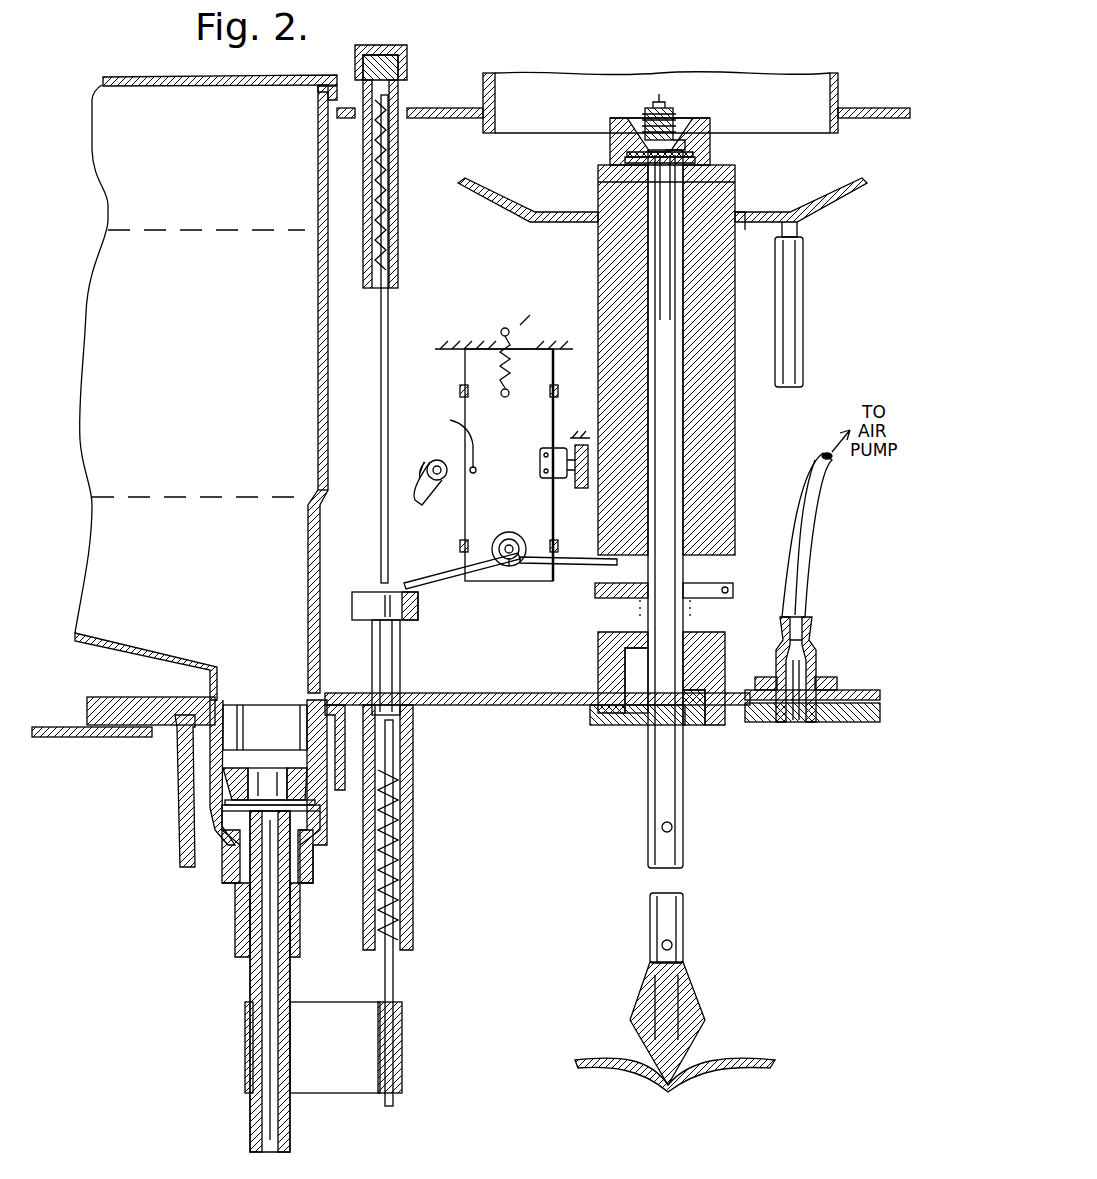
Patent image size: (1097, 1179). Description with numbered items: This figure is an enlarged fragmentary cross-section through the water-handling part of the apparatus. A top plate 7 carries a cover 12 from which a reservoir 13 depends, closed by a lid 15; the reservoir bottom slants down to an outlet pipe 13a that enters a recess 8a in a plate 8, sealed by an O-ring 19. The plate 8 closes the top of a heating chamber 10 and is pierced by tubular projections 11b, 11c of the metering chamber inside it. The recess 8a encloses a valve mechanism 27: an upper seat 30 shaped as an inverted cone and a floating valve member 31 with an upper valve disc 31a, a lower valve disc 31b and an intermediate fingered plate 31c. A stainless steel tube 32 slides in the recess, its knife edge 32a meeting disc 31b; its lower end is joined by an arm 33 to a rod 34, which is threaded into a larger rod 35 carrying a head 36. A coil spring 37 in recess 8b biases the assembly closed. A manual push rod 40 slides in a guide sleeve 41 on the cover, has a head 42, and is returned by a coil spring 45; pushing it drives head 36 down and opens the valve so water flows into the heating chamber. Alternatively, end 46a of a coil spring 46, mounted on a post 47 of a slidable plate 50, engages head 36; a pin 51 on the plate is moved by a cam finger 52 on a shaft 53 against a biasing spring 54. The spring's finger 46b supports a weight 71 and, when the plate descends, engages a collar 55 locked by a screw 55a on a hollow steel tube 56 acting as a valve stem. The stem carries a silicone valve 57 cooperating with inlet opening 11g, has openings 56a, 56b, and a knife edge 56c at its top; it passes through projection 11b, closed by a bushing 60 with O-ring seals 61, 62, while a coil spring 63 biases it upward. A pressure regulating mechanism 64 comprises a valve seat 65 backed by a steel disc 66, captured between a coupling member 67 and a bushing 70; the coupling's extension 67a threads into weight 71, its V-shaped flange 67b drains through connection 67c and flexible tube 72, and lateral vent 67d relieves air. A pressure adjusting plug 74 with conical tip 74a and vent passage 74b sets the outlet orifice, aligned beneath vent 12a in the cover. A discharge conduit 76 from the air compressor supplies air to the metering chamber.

The top plate 7 is at (52, 727).
The plate 8 is at (510, 693).
The recess 8a is at (332, 742).
The recess 8b is at (413, 770).
The heating chamber 10 is at (175, 750).
The tubular projection 11b is at (598, 676).
The tubular projection 11c is at (795, 725).
The inlet opening 11g is at (680, 1086).
The cover 12 is at (442, 108).
The vent 12a is at (530, 78).
The reservoir 13 is at (329, 368).
The outlet pipe 13a is at (228, 682).
The lid 15 is at (150, 77).
The O-ring 19 is at (242, 715).
The valve mechanism 27 is at (222, 918).
The upper seat 30 is at (232, 778).
The floating valve member 31 is at (228, 814).
The upper valve disc 31a is at (230, 807).
The lower valve disc 31b is at (225, 838).
The intermediate stainless steel plate 31c is at (325, 810).
The stainless steel tube 32 is at (250, 985).
The knife edge 32a is at (322, 840).
The arm 33 is at (322, 1080).
The rod 34 is at (392, 975).
The rod 35 is at (400, 655).
The head 36 is at (416, 612).
The coil spring 37 is at (405, 852).
The manual push rod 40 is at (382, 515).
The fixed guide sleeve 41 is at (388, 295).
The head 42 is at (395, 45).
The coil spring 45 is at (398, 211).
The coil spring 46 is at (495, 540).
The spring end 46a is at (425, 577).
The finger 46b is at (575, 557).
The post 47 is at (512, 572).
The vertically slidable plate 50 is at (465, 372).
The pin 51 is at (452, 420).
The cam finger 52 is at (422, 463).
The shaft 53 is at (447, 478).
The biasing spring 54 is at (522, 328).
The collar 55 is at (595, 600).
The screw 55a is at (733, 585).
The hollow steel tube 56 is at (670, 465).
The lateral opening 56a is at (673, 947).
The opening 56b is at (672, 828).
The knife edge 56c is at (745, 226).
The valve 57 is at (700, 1020).
The bushing 60 is at (728, 635).
The O-ring seal 61 is at (683, 715).
The O-ring seal 62 is at (598, 645).
The coil spring 63 is at (728, 600).
The pressure regulating mechanism 64 is at (830, 163).
The valve seat 65 is at (697, 160).
The stainless steel disc 66 is at (695, 146).
The coupling member 67 is at (610, 150).
The extension 67a is at (598, 242).
The peripheral flange 67b is at (832, 208).
The drainage connection 67c is at (806, 237).
The lateral vent 67d is at (600, 181).
The bushing 70 is at (632, 120).
The weight 71 is at (718, 290).
The flexible tube 72 is at (800, 357).
The pressure adjusting plug 74 is at (668, 100).
The conical tip 74a is at (684, 126).
The vent passage 74b is at (655, 98).
The discharge conduit 76 is at (806, 540).